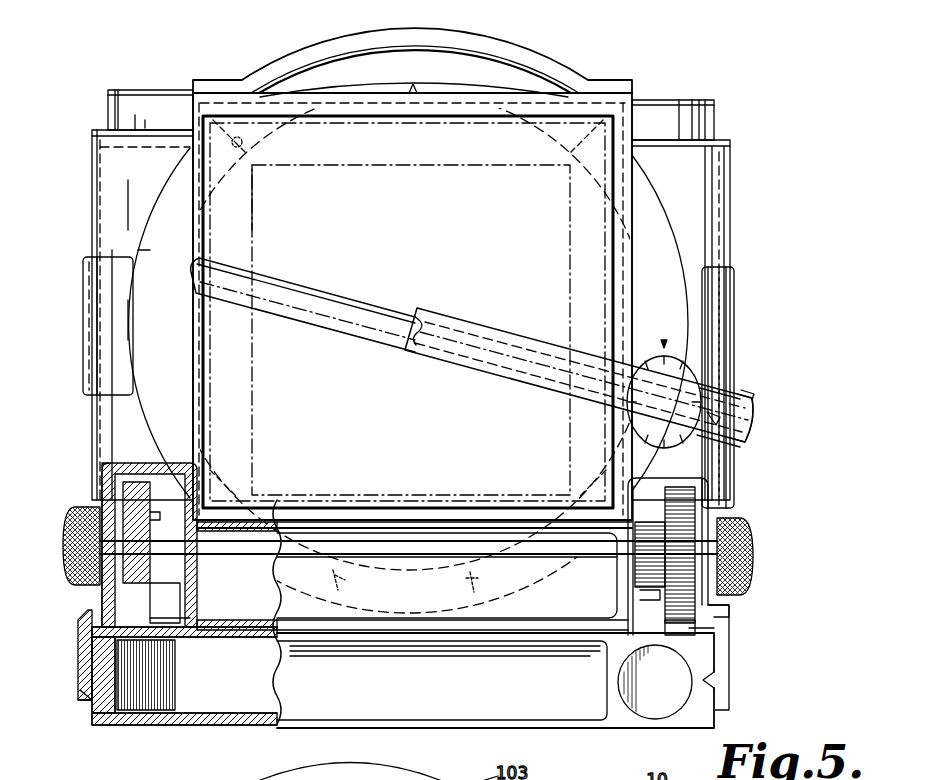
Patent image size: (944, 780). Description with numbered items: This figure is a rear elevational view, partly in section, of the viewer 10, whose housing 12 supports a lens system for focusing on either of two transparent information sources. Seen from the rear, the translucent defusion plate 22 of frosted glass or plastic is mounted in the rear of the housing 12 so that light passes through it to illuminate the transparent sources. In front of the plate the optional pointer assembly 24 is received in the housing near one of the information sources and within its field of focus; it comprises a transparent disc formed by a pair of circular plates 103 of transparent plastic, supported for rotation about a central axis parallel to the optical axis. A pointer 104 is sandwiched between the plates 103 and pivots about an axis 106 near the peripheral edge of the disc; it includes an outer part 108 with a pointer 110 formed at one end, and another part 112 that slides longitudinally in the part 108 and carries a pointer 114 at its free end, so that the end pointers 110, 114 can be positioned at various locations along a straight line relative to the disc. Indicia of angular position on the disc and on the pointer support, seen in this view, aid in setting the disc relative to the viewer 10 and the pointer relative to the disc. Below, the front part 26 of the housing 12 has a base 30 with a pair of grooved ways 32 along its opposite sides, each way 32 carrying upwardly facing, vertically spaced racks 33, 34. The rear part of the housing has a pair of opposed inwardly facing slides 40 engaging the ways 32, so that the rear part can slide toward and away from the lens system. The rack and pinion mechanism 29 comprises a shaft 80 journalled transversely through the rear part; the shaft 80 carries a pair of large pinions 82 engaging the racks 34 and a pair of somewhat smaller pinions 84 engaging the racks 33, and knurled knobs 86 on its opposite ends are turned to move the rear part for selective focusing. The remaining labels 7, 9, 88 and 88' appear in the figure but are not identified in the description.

The section line 7- 7 is at (150, 250).
The dial circle / section line 9- 9 is at (342, 48).
The viewer 10 is at (752, 199).
The housing 12 is at (735, 157).
The translucent defusion plate 22 is at (411, 330).
The pointer assembly 24 is at (754, 423).
The front part 26 is at (175, 727).
The rack and pinion mechanism 29 is at (733, 514).
The base 30 is at (625, 712).
The grooved way 32 is at (100, 680).
The rack 33 is at (173, 585).
The rack 34 is at (150, 620).
The slide 40 is at (78, 647).
The shaft 80 is at (518, 557).
The large pinion 82 is at (133, 490).
The smaller pinion 84 is at (165, 520).
The knurled knob 86 is at (63, 546).
The side panel 88 is at (717, 324).
The side panel 88' is at (116, 295).
The circular plate 103 is at (520, 74).
The pointer 104 is at (707, 390).
The axis 106 is at (662, 402).
The outer part 108 is at (490, 326).
The pointer 110 is at (414, 310).
The other part 112 is at (303, 260).
The pointer 114 is at (248, 226).